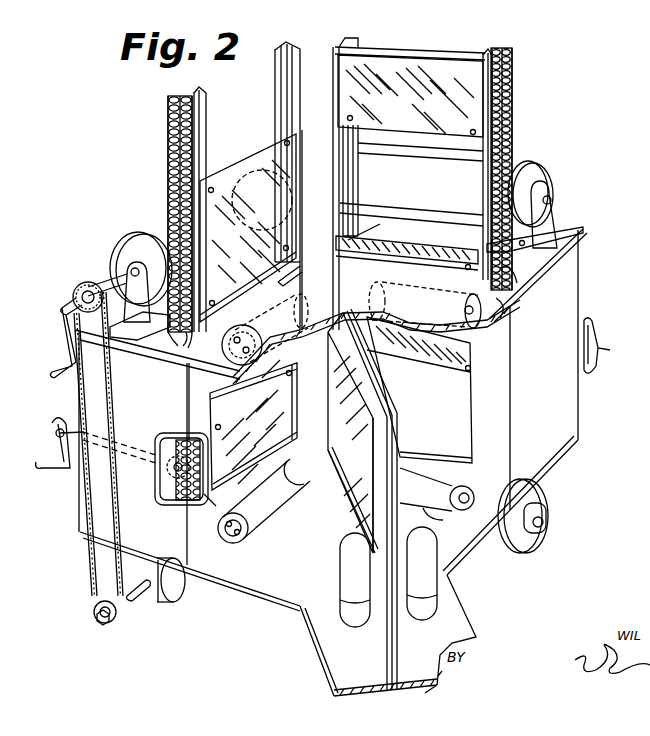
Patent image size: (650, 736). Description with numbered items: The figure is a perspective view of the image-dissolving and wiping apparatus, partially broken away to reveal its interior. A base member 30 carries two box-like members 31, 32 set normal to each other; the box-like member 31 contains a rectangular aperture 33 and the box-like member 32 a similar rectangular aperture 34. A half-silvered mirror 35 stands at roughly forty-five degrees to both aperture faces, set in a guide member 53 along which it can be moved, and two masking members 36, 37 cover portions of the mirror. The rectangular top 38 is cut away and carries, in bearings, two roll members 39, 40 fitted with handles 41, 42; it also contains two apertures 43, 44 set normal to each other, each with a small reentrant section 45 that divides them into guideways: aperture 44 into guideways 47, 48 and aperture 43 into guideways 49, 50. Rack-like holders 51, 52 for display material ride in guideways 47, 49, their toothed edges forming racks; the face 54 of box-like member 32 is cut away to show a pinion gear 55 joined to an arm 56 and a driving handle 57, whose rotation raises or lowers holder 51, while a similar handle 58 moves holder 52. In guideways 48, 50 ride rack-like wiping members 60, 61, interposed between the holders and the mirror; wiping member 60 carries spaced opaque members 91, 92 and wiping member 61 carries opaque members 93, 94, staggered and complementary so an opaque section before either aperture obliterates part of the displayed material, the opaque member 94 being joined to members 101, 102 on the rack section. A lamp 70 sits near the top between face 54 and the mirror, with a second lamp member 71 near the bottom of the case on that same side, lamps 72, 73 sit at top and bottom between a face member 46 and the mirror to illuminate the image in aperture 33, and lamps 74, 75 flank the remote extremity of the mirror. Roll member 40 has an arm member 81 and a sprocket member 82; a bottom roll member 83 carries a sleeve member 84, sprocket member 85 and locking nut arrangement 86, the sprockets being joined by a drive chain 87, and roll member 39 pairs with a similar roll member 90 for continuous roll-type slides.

The base member 30 is at (474, 556).
The box-like member 31 is at (578, 395).
The box-like member 32 is at (174, 545).
The rectangular aperture 33 is at (478, 416).
The rectangular aperture 34 is at (338, 487).
The half-silvered mirror 35 is at (348, 511).
The masking member 36 is at (352, 526).
The masking member 37 is at (386, 393).
The top 38 is at (562, 240).
The roll member 39 is at (544, 178).
The roll member 40 is at (112, 249).
The handle 41 is at (315, 165).
The handle 42 is at (64, 337).
The aperture 43 is at (513, 290).
The aperture 44 is at (283, 280).
The reentrant section 45 is at (189, 339).
The face member 46 is at (500, 464).
The guideway 47 is at (171, 337).
The guideway 48 is at (191, 333).
The guideway 49 is at (524, 273).
The guideway 50 is at (502, 317).
The rack-like holder 51 is at (168, 115).
The rack-like holder 52 is at (512, 71).
The guide member 53 is at (437, 681).
The face 54 is at (192, 389).
The pinion gear 55 is at (178, 436).
The arm 56 is at (64, 428).
The driving handle 57 is at (56, 429).
The handle 58 is at (600, 348).
The rack-like member 60 is at (195, 116).
The rack-like member 61 is at (484, 58).
The lamp 70 is at (300, 299).
The lower roller 71 is at (256, 519).
The lamp 72 is at (378, 290).
The lamp 73 is at (436, 513).
The lamp member 74 is at (440, 588).
The lamp member 75 is at (340, 582).
The arm member 81 is at (112, 275).
The sprocket member 82 is at (76, 295).
The roll member 83 is at (170, 605).
The sleeve member 84 is at (136, 600).
The sprocket member 85 is at (96, 600).
The locking nut arrangement 86 is at (103, 629).
The drive chain 87 is at (88, 555).
The roll member 90 is at (534, 547).
The opaque member 91 is at (245, 166).
The opaque member 92 is at (214, 506).
The opaque member 93 is at (425, 29).
The opaque member 94 is at (408, 246).
The member 101 is at (343, 204).
The member 102 is at (484, 228).